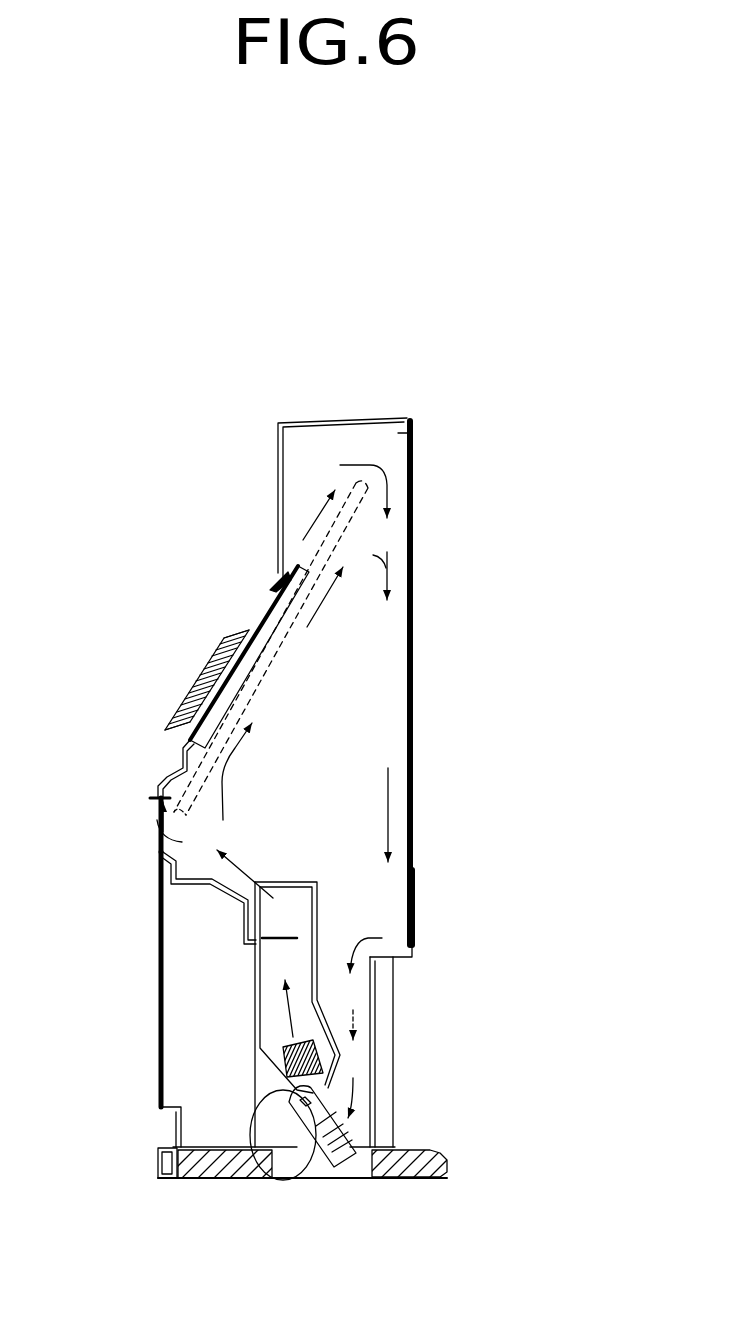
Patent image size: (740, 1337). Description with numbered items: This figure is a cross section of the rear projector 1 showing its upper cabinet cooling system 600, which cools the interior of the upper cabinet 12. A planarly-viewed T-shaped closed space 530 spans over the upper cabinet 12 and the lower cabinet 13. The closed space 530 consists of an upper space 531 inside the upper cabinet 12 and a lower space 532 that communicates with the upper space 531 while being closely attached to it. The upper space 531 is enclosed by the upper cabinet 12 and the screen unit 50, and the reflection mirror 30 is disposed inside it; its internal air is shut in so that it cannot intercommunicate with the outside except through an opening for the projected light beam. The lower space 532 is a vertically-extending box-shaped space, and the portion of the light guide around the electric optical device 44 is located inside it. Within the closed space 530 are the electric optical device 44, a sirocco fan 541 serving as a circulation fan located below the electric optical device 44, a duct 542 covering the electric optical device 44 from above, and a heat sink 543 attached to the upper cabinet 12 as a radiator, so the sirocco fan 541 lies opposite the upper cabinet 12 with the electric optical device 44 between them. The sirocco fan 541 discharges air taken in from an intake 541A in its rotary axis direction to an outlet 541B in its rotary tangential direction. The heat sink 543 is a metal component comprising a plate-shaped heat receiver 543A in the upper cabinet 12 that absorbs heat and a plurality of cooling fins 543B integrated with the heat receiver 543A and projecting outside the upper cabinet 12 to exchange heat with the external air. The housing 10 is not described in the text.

The rear projector 1 is at (418, 343).
The housing 10 is at (157, 838).
The upper cabinet 12 is at (155, 852).
The lower cabinet 13 is at (160, 1063).
The reflection mirror 30 is at (147, 825).
The electric optical device 44 is at (285, 1088).
The screen unit 50 is at (412, 638).
The closed space 530 is at (527, 875).
The upper space 531 is at (390, 903).
The lower space 532 is at (358, 990).
The sirocco fan 541 is at (347, 1150).
The intake 541A is at (340, 1123).
The outlet 541B is at (303, 1097).
The duct 542 is at (286, 880).
The heat sink 543 is at (262, 526).
The heat receiver 543A is at (260, 623).
The cooling fins 543B is at (233, 623).
The upper cabinet cooling system 600 is at (383, 485).